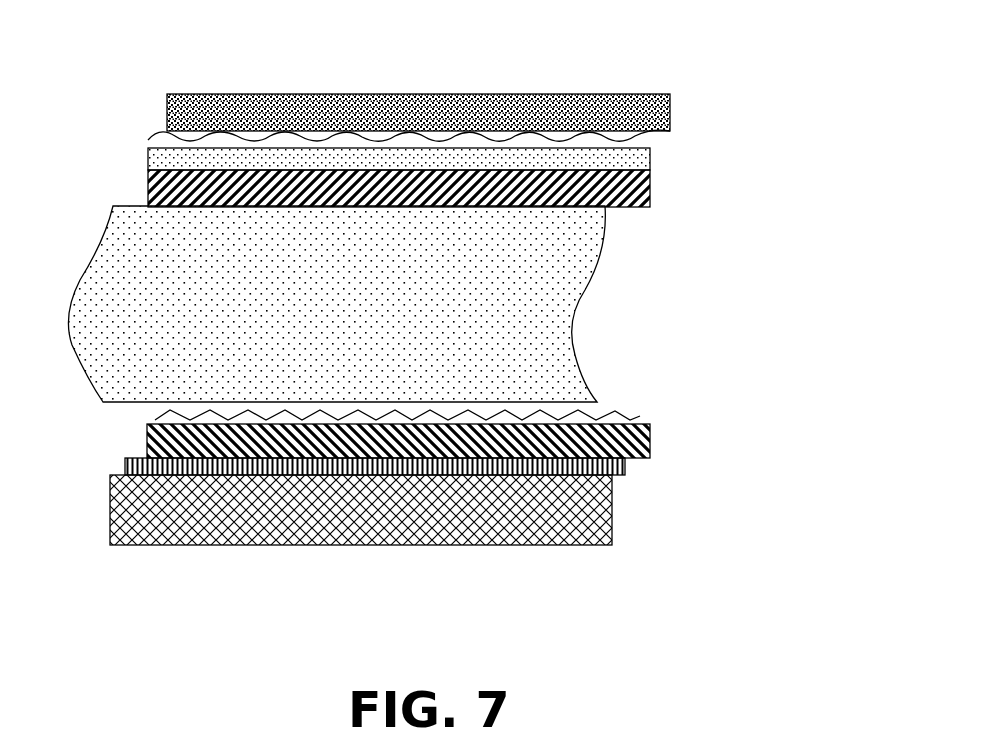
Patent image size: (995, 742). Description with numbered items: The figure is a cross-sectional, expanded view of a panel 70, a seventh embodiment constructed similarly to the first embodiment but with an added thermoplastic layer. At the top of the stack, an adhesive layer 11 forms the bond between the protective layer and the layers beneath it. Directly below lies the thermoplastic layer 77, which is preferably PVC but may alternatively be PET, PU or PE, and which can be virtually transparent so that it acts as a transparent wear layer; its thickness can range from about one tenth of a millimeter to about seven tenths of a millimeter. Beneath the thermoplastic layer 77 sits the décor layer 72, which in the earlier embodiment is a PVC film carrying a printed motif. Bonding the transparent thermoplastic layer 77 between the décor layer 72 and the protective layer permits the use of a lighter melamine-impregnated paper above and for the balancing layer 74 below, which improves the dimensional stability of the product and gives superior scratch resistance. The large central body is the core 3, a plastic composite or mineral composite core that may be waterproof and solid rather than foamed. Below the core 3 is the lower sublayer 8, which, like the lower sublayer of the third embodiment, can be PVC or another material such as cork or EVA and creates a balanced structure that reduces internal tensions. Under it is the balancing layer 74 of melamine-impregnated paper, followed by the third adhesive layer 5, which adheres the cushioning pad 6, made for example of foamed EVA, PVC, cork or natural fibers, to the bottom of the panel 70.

The panel 70 is at (543, 66).
The adhesive layer 11 is at (155, 132).
The thermoplastic layer 77 is at (675, 155).
The décor layer 72 is at (650, 203).
The core 3 is at (133, 290).
The lower sublayer 8 is at (608, 416).
The balancing layer 74 is at (652, 443).
The third adhesive layer 5 is at (121, 462).
The cushioning pad 6 is at (110, 520).